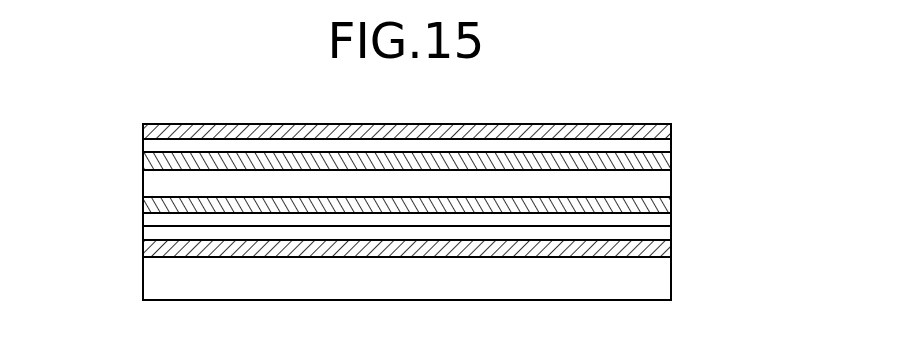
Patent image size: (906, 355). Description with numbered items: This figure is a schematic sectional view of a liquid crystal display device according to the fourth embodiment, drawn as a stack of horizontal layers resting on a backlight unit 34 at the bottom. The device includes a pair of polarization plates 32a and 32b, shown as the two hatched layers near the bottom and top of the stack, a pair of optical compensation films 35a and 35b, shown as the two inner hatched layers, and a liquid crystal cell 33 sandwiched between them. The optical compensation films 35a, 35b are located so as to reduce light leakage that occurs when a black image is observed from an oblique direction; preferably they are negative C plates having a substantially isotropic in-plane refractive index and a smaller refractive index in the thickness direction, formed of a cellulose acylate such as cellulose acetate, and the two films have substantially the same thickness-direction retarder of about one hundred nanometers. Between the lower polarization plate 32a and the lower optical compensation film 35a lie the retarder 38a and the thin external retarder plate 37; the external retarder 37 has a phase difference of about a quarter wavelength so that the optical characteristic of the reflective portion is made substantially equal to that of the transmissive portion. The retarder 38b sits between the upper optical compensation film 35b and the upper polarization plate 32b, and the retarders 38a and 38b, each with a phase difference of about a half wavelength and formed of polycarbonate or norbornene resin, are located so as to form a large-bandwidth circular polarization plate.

The polarization plate 32a is at (669, 240).
The polarization plate 32b is at (669, 126).
The liquid crystal cell 33 is at (151, 181).
The backlight unit 34 is at (151, 278).
The optical compensation film 35a is at (669, 198).
The optical compensation film 35b is at (669, 156).
The external retarder plate 37 is at (151, 218).
The retarder 38a is at (151, 235).
The retarder 38b is at (151, 146).